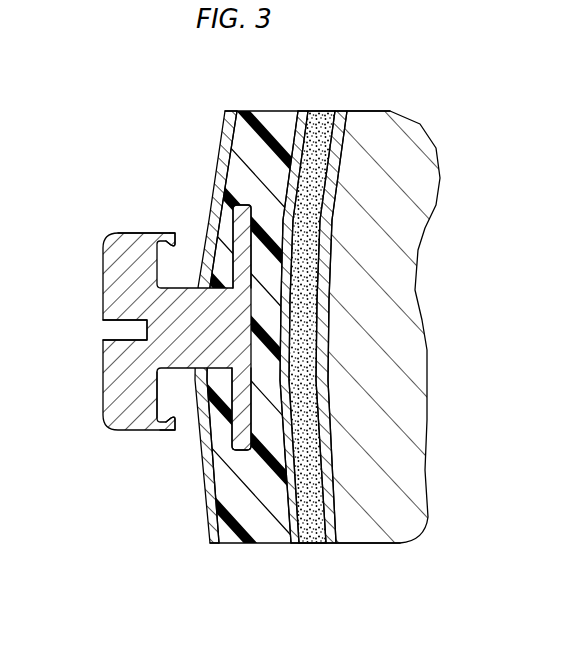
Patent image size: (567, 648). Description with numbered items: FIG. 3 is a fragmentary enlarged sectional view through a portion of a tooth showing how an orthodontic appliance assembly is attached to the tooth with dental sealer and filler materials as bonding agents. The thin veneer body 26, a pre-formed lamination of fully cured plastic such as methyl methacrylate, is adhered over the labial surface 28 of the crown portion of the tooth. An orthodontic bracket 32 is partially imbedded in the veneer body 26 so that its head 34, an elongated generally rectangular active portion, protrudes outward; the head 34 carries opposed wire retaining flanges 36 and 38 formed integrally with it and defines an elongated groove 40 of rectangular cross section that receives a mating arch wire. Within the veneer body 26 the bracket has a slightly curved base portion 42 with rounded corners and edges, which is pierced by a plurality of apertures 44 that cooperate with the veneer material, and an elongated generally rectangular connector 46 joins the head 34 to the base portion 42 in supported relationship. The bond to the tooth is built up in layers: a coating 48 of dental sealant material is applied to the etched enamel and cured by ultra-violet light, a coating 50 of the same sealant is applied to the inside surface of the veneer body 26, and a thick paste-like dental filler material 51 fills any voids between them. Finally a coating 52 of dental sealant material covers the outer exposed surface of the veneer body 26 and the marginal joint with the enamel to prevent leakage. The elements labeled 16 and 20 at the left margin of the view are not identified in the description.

The first wall 16 is at (2, 108).
The second wall 20 is at (2, 232).
The thin veneer body 26 is at (235, 510).
The labial surface 28 is at (337, 500).
The orthodontic bracket 32 is at (98, 272).
The head 34 is at (125, 243).
The wire retaining flange 36 is at (172, 232).
The wire retaining flange 38 is at (167, 433).
The groove 40 is at (112, 336).
The base portion 42 is at (252, 212).
The apertures 44 is at (250, 427).
The connector 46 is at (168, 372).
The coating of dental sealant material 48 is at (343, 112).
The coating of dental sealant material 50 is at (303, 110).
The dental filler material 51 is at (308, 545).
The coating of dental sealant material 52 is at (220, 123).